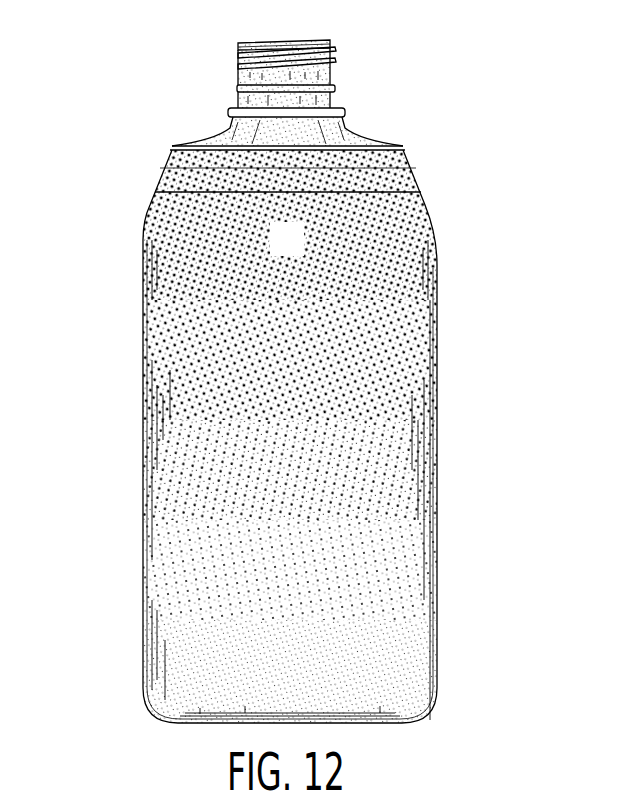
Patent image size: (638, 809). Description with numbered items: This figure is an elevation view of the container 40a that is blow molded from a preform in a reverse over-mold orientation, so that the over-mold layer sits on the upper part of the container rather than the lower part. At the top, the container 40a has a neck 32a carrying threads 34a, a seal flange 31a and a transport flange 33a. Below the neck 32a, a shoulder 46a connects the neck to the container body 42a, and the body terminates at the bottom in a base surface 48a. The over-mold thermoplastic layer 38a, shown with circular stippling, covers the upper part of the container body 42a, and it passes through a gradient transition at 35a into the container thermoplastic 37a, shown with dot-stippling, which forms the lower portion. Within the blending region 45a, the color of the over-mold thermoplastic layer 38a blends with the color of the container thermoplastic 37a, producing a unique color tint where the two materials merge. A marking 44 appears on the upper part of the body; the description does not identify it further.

The container 40a is at (448, 192).
The threads 34a is at (334, 52).
The seal flange 31a is at (240, 87).
The neck 32a is at (335, 93).
The transport flange 33a is at (228, 116).
The shoulder 46a is at (173, 152).
The over-mold thermoplastic layer 38a is at (147, 245).
The container body 42a is at (437, 252).
The label area 44 is at (301, 252).
The gradient transition 35a is at (437, 433).
The blending region 45a is at (135, 358).
The container thermoplastic 37a is at (187, 657).
The base surface 48a is at (427, 713).